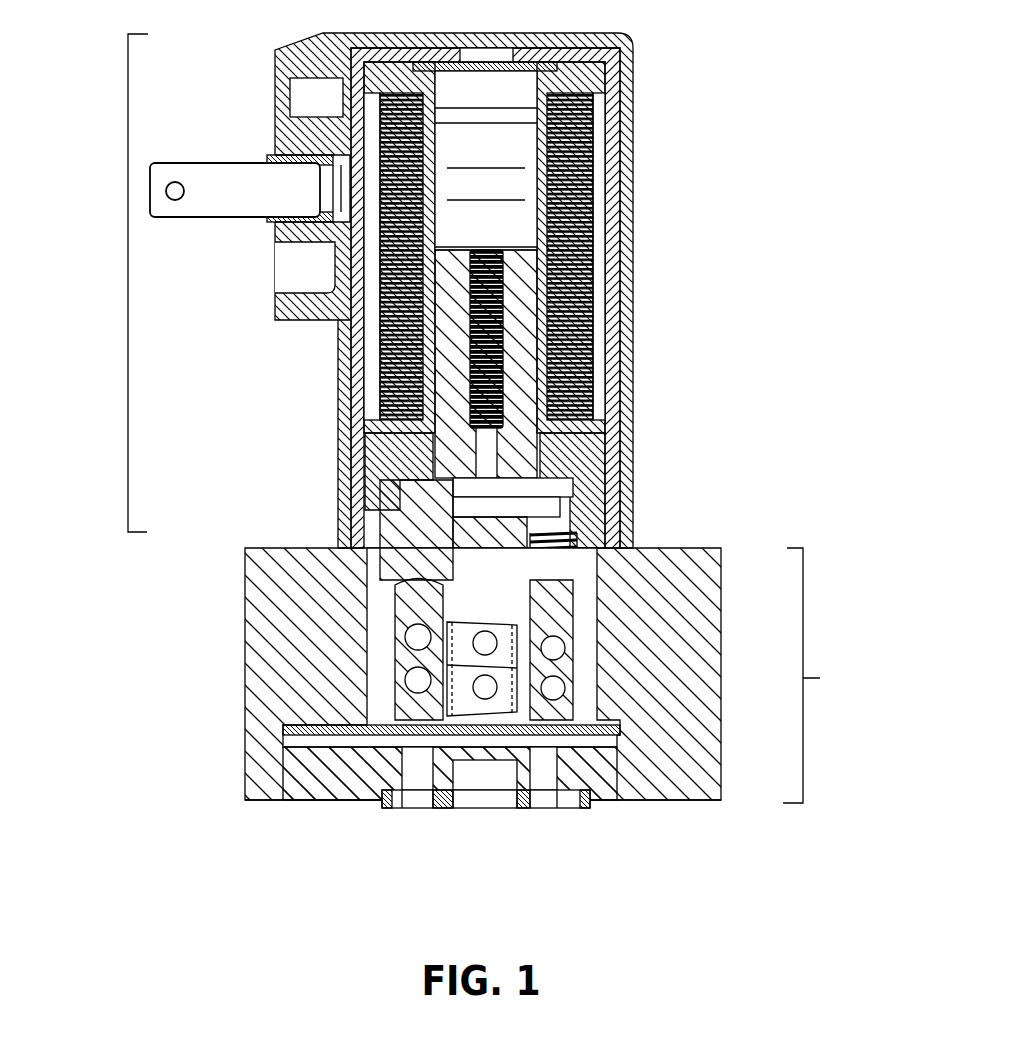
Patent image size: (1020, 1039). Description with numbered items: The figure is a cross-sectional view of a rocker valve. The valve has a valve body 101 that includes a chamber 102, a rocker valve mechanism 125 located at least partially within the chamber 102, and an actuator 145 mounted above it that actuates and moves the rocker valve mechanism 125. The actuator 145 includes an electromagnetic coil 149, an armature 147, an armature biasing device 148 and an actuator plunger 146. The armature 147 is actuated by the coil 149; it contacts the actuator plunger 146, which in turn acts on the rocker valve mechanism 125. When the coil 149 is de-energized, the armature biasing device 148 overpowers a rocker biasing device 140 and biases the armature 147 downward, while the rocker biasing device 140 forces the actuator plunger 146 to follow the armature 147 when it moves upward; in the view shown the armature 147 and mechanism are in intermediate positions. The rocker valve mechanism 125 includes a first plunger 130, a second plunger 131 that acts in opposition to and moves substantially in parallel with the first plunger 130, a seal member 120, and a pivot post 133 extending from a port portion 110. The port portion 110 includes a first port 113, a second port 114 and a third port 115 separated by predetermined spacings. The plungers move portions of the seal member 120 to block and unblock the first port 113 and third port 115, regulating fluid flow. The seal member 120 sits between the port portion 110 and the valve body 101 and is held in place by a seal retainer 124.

The actuator 145 is at (128, 265).
The electromagnetic coil 149 is at (603, 173).
The armature 147 is at (520, 315).
The armature biasing device 148 is at (503, 368).
The chamber 102 is at (503, 577).
The rocker biasing device 140 is at (600, 577).
The valve body 101 is at (245, 622).
The rocker valve mechanism 125 is at (820, 678).
The seal retainer 124 is at (283, 733).
The seal member 120 is at (355, 800).
The port portion 110 is at (293, 802).
The first port 113 is at (415, 810).
The second port 114 is at (480, 810).
The third port 115 is at (546, 810).
The actuator plunger 146 is at (380, 585).
The first plunger 130 is at (395, 667).
The pivot post 133 is at (478, 620).
The second plunger 131 is at (577, 667).